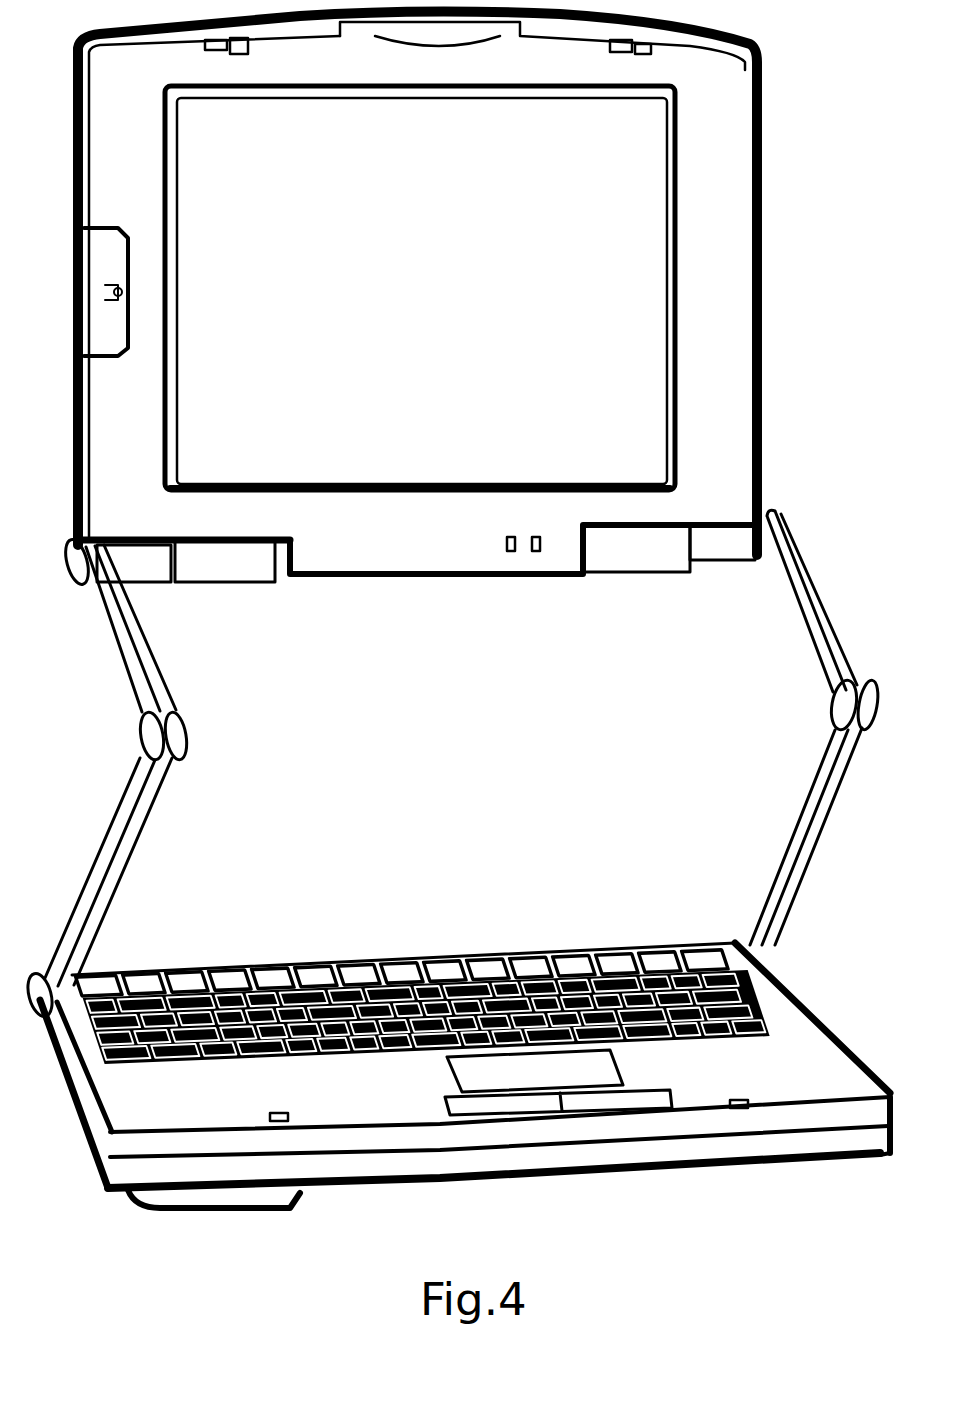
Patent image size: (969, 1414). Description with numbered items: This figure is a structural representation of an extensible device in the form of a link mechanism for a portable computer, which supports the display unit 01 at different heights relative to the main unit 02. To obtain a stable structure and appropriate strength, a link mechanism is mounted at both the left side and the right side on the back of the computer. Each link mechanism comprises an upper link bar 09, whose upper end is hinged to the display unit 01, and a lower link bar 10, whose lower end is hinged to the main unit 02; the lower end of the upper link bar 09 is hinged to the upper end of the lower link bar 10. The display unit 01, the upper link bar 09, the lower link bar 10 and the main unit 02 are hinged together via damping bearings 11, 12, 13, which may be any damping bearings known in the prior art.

The display unit 01 is at (522, 390).
The main unit 02 is at (525, 955).
The upper link bar 09 is at (768, 573).
The lower link bar 10 is at (758, 900).
The damping bearing 11 is at (150, 632).
The damping bearing 12 is at (92, 955).
The damping bearing 13 is at (182, 750).